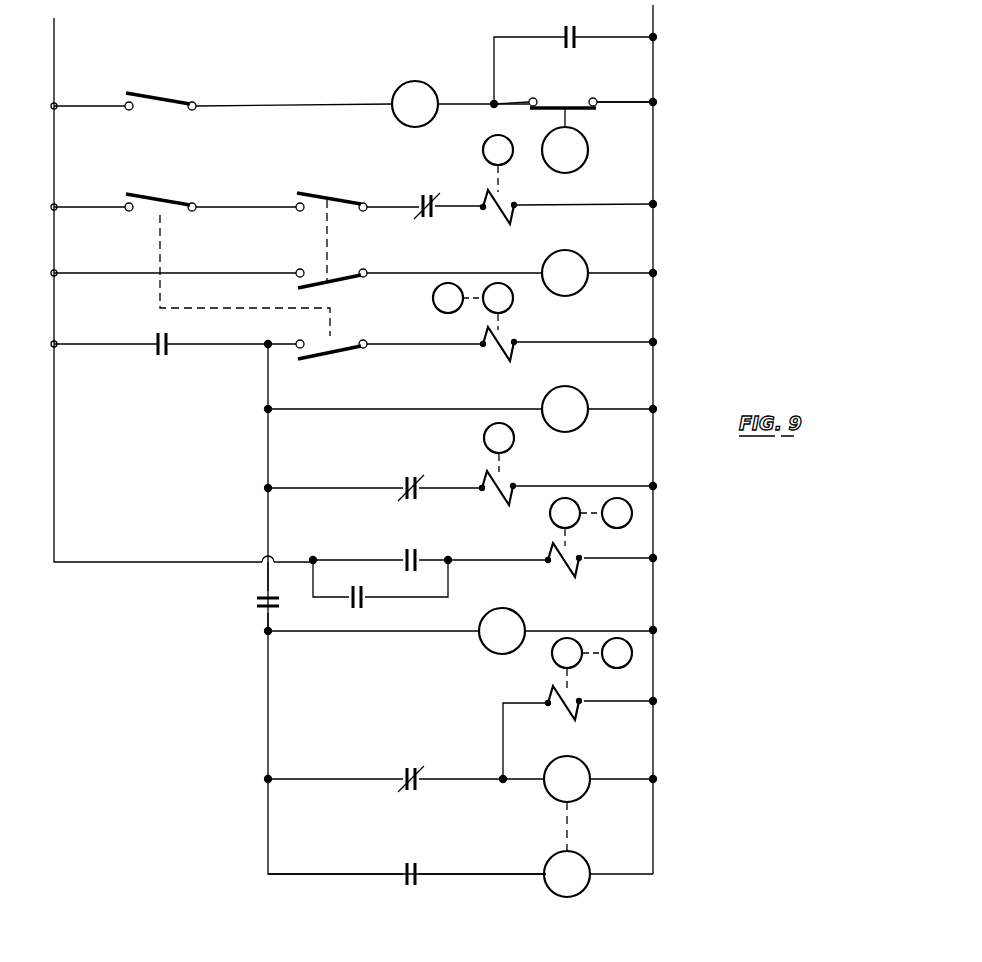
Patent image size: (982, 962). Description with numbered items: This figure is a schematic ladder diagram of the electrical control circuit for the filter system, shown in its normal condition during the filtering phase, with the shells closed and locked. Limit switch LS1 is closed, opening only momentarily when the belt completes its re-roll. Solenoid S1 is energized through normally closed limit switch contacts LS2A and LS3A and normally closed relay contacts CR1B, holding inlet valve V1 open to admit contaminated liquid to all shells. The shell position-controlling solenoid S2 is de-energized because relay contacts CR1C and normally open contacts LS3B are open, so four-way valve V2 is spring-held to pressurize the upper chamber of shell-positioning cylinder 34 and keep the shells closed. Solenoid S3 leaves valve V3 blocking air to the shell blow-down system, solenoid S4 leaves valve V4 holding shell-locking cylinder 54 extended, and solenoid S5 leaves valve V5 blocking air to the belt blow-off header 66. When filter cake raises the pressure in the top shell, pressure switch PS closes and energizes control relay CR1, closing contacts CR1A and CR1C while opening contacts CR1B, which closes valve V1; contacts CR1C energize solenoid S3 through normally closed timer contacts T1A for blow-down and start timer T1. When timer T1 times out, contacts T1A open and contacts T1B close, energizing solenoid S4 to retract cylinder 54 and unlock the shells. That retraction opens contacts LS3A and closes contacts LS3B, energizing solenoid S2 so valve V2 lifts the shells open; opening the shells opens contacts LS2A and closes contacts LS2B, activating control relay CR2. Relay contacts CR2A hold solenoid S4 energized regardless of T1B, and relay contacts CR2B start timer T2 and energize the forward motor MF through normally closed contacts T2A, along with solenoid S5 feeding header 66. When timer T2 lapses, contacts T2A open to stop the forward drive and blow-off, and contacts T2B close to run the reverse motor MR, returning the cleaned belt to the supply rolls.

The shell-positioning cylinder 34 is at (435, 300).
The shell-locking cylinder 54 is at (617, 529).
The belt blow-off header 66 is at (619, 668).
The limit switch LS1 is at (160, 99).
The normally closed limit switch contacts LS3A is at (227, 249).
The normally closed limit switch contacts LS2A is at (331, 222).
The normally open limit switch contacts LS2B is at (336, 271).
The normally open limit switch contacts LS3B is at (339, 343).
The control relay CR1 is at (415, 104).
The relay contacts CR1A is at (575, 52).
The normally closed relay contacts CR1B is at (429, 202).
The relay contacts CR1C is at (170, 369).
The control relay CR2 is at (565, 273).
The relay contacts CR2A is at (380, 594).
The relay contacts CR2B is at (239, 596).
The pressure switch PS is at (575, 135).
The inlet valve V1 is at (483, 148).
The four-way valve V2 is at (513, 302).
The blow-down valve V3 is at (485, 433).
The locking valve V4 is at (551, 513).
The blow-off valve V5 is at (552, 652).
The solenoid S1 is at (507, 200).
The shell position-controlling solenoid S2 is at (484, 339).
The solenoid S3 is at (511, 479).
The solenoid S4 is at (550, 553).
The solenoid S5 is at (580, 726).
The timer T1 is at (565, 409).
The normally closed timer contacts T1A is at (409, 484).
The timer contacts T1B is at (412, 557).
The timer T2 is at (502, 631).
The normally closed timer contacts T2A is at (409, 773).
The timer contacts T2B is at (408, 868).
The forward motor winding MF is at (567, 803).
The reverse motor winding MR is at (567, 874).